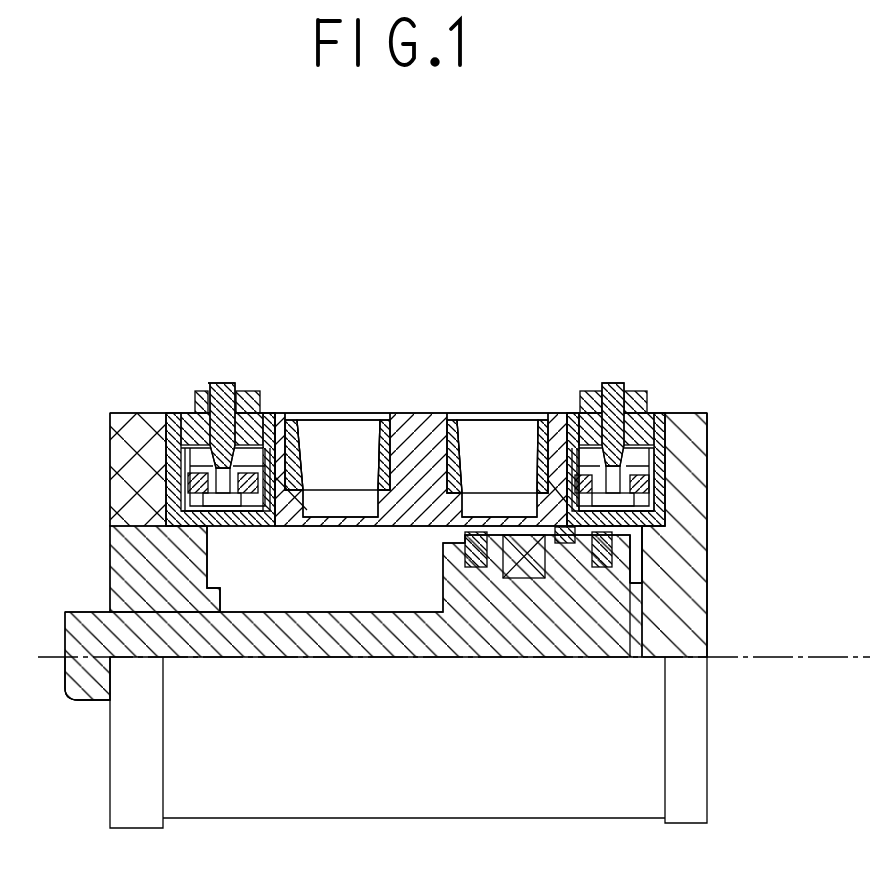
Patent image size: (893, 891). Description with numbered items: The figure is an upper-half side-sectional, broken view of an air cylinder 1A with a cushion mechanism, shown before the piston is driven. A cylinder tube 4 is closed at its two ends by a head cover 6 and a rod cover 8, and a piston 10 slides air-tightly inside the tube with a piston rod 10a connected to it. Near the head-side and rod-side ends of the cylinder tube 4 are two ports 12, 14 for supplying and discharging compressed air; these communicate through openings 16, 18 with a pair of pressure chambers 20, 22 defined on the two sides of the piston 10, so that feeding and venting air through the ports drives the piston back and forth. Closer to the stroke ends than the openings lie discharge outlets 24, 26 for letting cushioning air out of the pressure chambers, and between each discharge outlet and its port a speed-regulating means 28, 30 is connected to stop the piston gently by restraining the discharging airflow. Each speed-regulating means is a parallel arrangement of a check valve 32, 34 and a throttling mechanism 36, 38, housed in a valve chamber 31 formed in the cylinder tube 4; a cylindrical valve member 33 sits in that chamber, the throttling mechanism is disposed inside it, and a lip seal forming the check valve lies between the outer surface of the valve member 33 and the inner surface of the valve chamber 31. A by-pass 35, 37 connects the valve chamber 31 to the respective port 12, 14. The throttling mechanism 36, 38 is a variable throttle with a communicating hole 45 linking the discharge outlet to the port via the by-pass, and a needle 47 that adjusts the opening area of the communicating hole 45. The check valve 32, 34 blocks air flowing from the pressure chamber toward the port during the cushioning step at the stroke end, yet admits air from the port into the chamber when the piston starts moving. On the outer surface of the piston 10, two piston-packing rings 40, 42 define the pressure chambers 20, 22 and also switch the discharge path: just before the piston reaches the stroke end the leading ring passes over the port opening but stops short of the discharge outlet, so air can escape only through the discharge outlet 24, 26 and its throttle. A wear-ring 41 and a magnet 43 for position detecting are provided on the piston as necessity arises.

The air cylinder 1A is at (431, 280).
The cylinder tube 4 is at (424, 408).
The head cover 6 is at (690, 603).
The rod cover 8 is at (125, 455).
The piston 10 is at (610, 625).
The piston rod 10a is at (95, 684).
The port 12 is at (524, 410).
The port 14 is at (365, 410).
The opening 16 is at (497, 413).
The opening 18 is at (350, 418).
The pressure chamber 20 is at (636, 553).
The pressure chamber 22 is at (213, 570).
The discharge outlet 24 is at (670, 533).
The discharge outlet 26 is at (200, 527).
The speed-regulating means 28 is at (661, 392).
The speed-regulating means 30 is at (222, 407).
The valve chamber 31 is at (185, 475).
The check valve 32 is at (650, 480).
The valve member 33 is at (193, 428).
The check valve 34 is at (193, 488).
The by-pass 35 is at (568, 413).
The throttling mechanism 36 is at (697, 413).
The by-pass 37 is at (287, 413).
The throttling mechanism 38 is at (208, 432).
The piston-packing ring 40 is at (690, 628).
The wear-ring 41 is at (566, 543).
The piston-packing ring 42 is at (463, 540).
The magnet 43 is at (525, 578).
The communicating hole 45 is at (255, 528).
The needle 47 is at (226, 383).